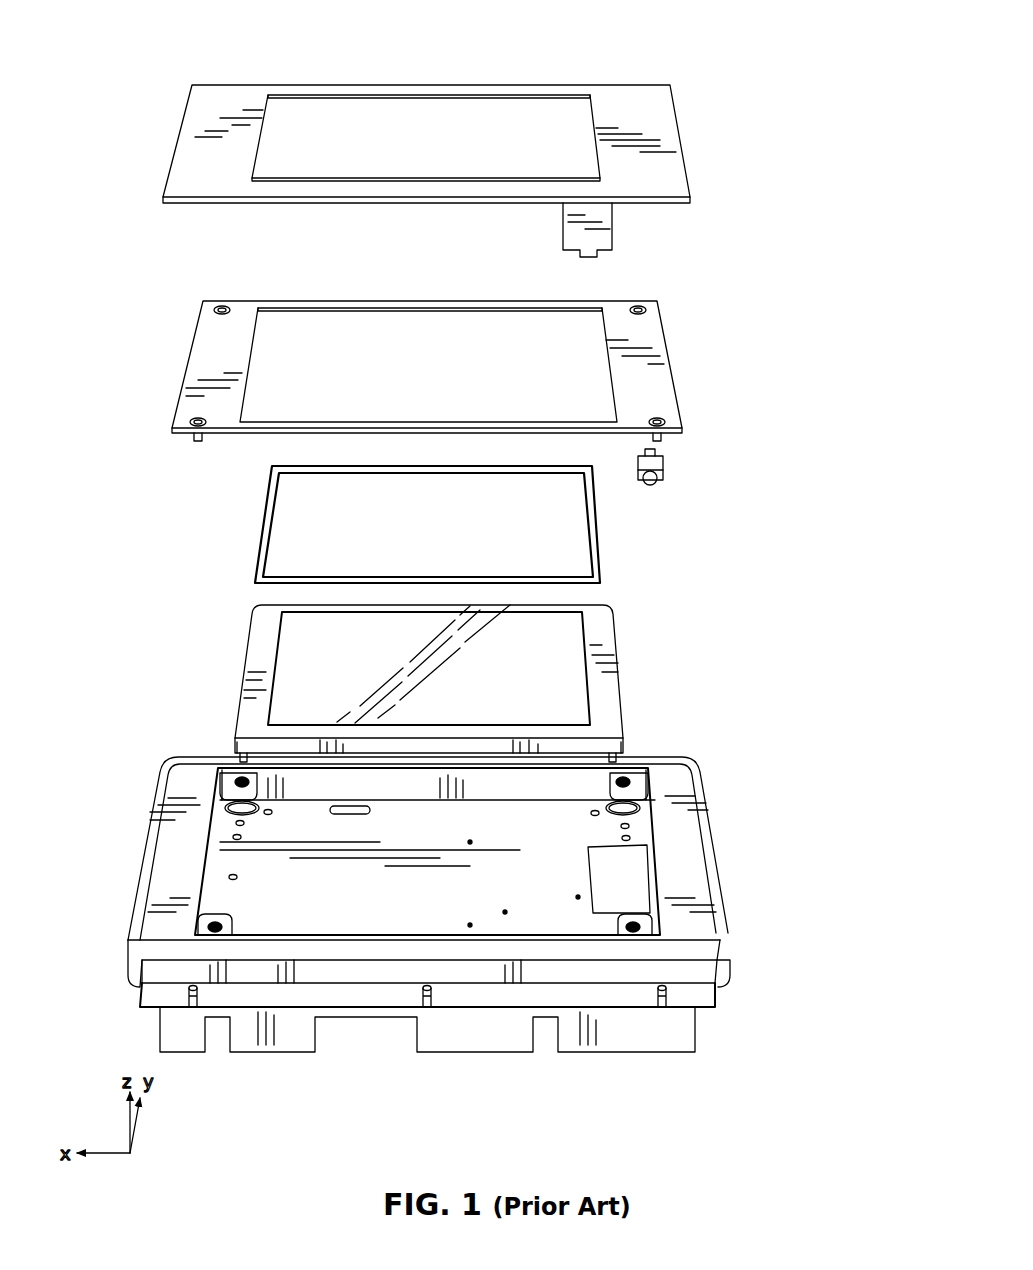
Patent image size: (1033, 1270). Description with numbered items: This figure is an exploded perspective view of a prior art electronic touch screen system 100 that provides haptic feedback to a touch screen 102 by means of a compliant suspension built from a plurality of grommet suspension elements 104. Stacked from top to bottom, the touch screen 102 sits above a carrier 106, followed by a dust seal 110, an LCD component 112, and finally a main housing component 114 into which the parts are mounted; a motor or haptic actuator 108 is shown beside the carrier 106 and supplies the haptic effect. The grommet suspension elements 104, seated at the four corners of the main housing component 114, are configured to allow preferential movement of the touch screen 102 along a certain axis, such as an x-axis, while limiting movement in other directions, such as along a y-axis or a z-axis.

The electronic touch screen system 100 is at (793, 282).
The touch screen 102 is at (712, 118).
The grommet suspension elements 104 is at (242, 780).
The carrier 106 is at (683, 345).
The haptic actuator 108 is at (675, 465).
The dust seal 110 is at (608, 538).
The LCD component 112 is at (632, 655).
The main housing component 114 is at (733, 828).